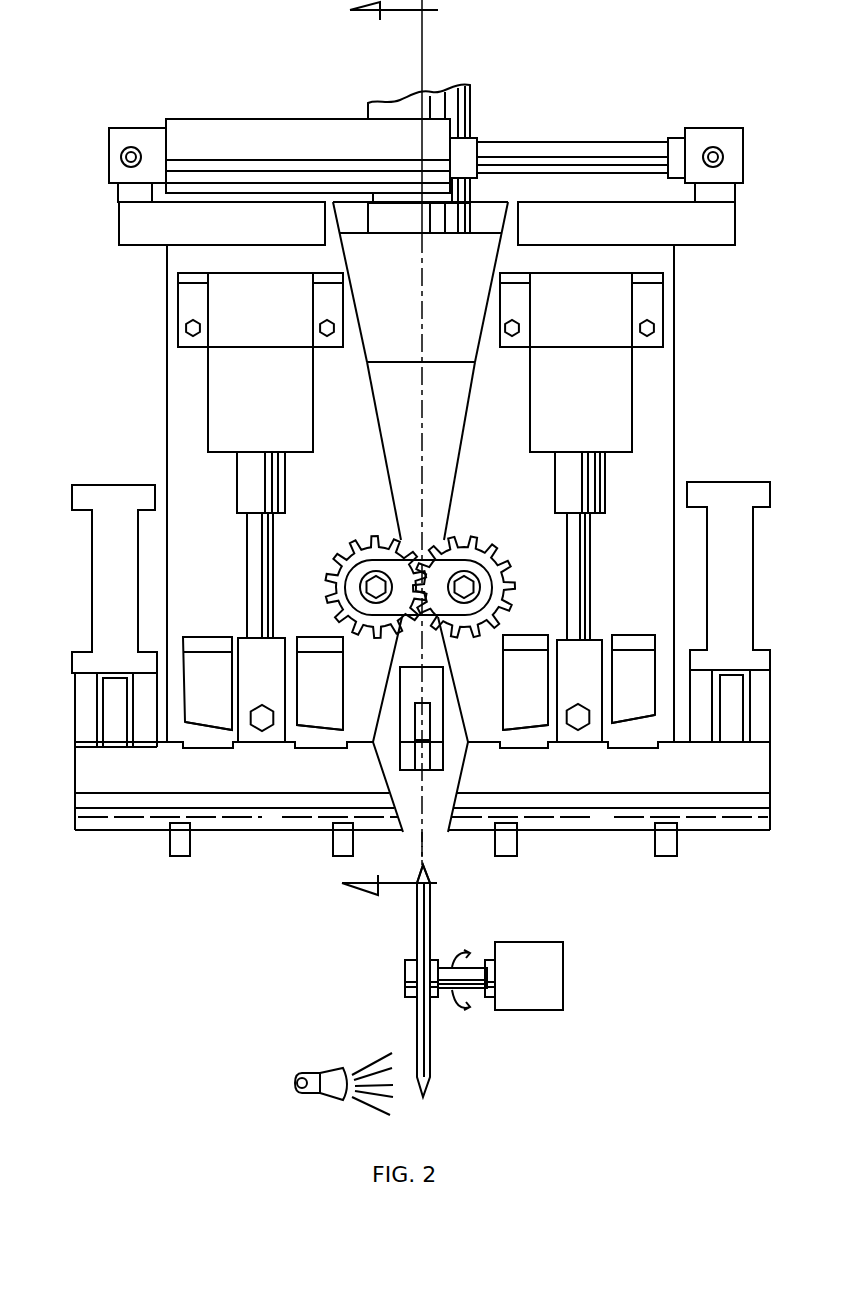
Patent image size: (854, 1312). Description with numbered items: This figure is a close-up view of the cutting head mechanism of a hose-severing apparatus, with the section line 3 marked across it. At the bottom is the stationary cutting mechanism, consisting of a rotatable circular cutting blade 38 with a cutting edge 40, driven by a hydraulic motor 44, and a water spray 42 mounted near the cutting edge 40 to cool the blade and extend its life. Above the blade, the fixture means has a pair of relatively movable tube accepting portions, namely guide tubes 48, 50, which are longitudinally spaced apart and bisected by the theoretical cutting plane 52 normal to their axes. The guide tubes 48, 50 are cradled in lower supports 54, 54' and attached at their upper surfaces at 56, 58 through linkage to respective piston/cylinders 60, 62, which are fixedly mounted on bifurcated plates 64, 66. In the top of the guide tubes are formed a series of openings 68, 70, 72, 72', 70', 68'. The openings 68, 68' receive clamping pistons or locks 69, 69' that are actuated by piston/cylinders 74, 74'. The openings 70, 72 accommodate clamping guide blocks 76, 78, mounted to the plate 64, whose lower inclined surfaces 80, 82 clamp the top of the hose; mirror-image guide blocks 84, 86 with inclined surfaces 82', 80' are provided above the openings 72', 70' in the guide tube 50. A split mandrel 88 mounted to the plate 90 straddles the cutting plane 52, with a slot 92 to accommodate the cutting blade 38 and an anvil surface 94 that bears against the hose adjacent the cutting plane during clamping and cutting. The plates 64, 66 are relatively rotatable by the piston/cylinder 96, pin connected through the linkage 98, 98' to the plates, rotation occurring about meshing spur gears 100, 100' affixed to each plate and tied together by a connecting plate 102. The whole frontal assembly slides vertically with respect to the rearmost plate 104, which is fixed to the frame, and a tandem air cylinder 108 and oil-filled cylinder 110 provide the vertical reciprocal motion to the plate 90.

The section line for FIG. 3 is at (377, 449).
The cutting blade 38 is at (447, 918).
The cutting edge 40 is at (424, 868).
The water spray 42 is at (330, 1078).
The hydraulic motor 44 is at (550, 948).
The tube accepting portion 48 is at (272, 818).
The tube accepting portion 50 is at (605, 818).
The cutting plane 52 is at (420, 837).
The lower support 54 is at (261, 853).
The lower support 54' is at (586, 849).
The upper surface attachment 56 is at (262, 742).
The upper surface attachment 58 is at (572, 745).
The piston/cylinder 60 is at (218, 412).
The piston/cylinder 62 is at (610, 431).
The bifurcated plate 64 is at (346, 491).
The bifurcated plate 66 is at (498, 491).
The opening 68 is at (129, 731).
The opening 68' is at (713, 730).
The clamping piston 69 is at (102, 734).
The clamping piston 69' is at (743, 733).
The opening 70 is at (209, 713).
The opening 70' is at (634, 712).
The opening 72 is at (320, 713).
The opening 72' is at (518, 711).
The piston/cylinder 74 is at (107, 657).
The piston/cylinder 74' is at (743, 656).
The clamping guide block 76 is at (222, 682).
The clamping guide block 78 is at (332, 682).
The inclined surface 80 is at (208, 709).
The inclined surface 80' is at (633, 707).
The inclined surface 82 is at (320, 709).
The inclined surface 82' is at (525, 709).
The guide block 84 is at (537, 682).
The guide block 86 is at (646, 682).
The split mandrel 88 is at (414, 678).
The plate 90 is at (456, 403).
The slot 92 is at (427, 767).
The anvil surface 94 is at (408, 763).
The piston/cylinder 96 is at (258, 132).
The linkage 98 is at (200, 214).
The linkage 98' is at (650, 214).
The spur gear 100 is at (373, 572).
The spur gear 100' is at (475, 572).
The connecting plate 102 is at (440, 601).
The rearmost plate 104 is at (410, 277).
The tandem air cylinder 108 is at (463, 95).
The oil-filled cylinder 110 is at (463, 217).